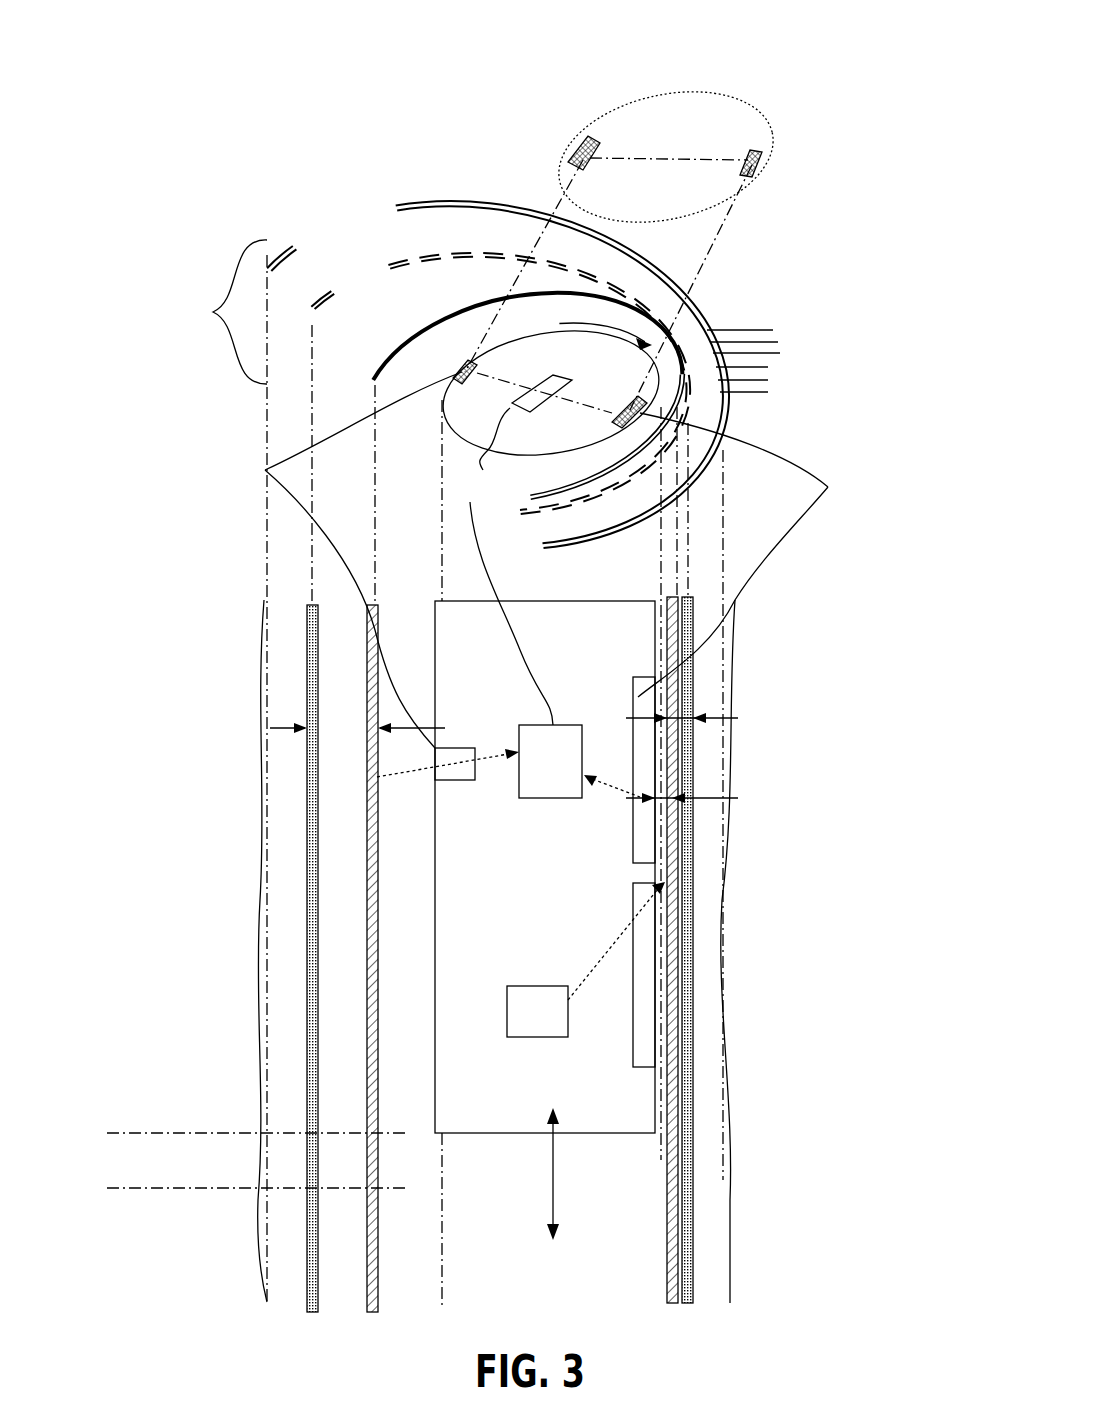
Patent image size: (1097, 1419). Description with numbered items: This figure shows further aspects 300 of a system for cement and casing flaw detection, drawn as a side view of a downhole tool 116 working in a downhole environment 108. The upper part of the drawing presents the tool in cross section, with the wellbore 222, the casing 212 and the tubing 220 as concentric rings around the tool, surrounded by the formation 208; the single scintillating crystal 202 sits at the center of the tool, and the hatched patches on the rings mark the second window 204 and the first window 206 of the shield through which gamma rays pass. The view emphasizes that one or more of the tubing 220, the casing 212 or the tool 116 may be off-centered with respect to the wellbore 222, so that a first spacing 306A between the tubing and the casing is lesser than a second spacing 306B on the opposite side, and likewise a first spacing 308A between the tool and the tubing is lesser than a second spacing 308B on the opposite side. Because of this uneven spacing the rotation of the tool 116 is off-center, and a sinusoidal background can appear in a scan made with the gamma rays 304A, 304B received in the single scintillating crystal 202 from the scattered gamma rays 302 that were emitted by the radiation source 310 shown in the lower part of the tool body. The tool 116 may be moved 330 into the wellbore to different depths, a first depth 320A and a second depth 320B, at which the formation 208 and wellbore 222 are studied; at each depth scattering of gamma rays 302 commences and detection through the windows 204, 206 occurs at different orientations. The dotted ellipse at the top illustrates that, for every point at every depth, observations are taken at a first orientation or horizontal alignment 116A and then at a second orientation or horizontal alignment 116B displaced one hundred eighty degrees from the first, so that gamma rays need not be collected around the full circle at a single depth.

The further aspects 300 is at (817, 58).
The second orientation or horizontal alignment 116B is at (640, 158).
The first orientation or horizontal alignment 116A is at (655, 340).
The wellbore 222 is at (498, 369).
The casing 212 is at (497, 383).
The tubing 220 is at (511, 396).
The formation 208 is at (395, 772).
The downhole environment 108 is at (826, 371).
The downhole tool 116 is at (500, 810).
The second window 204 is at (321, 570).
The first window 206 is at (766, 629).
The second spacing 306B is at (345, 650).
The gamma rays received 304B is at (412, 767).
The second spacing 308B is at (397, 862).
The gamma rays received 304A is at (623, 815).
The first spacing 306A is at (688, 693).
The first spacing 308A is at (675, 795).
The scattered gamma rays 302 is at (647, 918).
The single scintillating crystal 202 is at (550, 761).
The radiation source 310 is at (537, 1011).
The first depth 320A is at (257, 1137).
The second depth 320B is at (257, 1192).
The tool movement 330 is at (554, 1174).